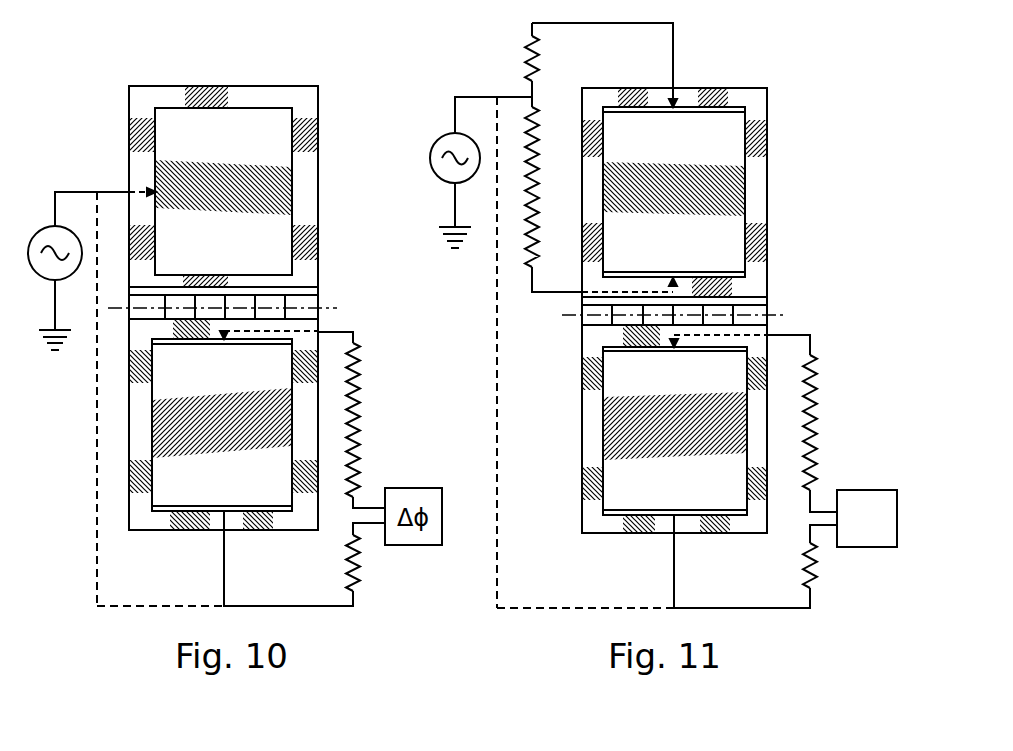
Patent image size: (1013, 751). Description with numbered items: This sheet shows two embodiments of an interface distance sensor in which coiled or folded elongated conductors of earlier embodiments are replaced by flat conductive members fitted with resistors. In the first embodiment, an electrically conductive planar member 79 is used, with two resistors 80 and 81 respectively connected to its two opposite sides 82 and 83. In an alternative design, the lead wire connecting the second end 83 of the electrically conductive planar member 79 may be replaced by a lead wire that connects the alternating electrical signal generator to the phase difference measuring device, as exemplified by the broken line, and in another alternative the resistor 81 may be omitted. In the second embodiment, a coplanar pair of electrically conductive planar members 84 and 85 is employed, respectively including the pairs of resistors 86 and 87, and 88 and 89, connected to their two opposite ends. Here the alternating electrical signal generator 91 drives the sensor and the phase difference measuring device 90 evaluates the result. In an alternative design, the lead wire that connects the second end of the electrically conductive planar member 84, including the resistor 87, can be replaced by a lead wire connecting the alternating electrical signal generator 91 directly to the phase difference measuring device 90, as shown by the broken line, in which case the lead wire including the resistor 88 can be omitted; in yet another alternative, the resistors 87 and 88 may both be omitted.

In FIG. 10, the electrically conductive planar member 79 is at (180, 418).
In FIG. 10, the resistor 80 is at (362, 418).
In FIG. 10, the resistor 81 is at (363, 568).
In FIG. 10, the first side of the electrically conductive planar member 82 is at (156, 333).
In FIG. 10, the second end of the electrically conductive planar member 83 is at (161, 512).
In FIG. 11, the electrically conductive planar member 84 is at (630, 427).
In FIG. 11, the electrically conductive planar member 85 is at (718, 193).
In FIG. 11, the resistor 86 is at (814, 408).
In FIG. 11, the resistor 87 is at (822, 558).
In FIG. 11, the resistor 88 is at (528, 54).
In FIG. 11, the resistor 89 is at (541, 130).
In FIG. 11, the phase difference measuring device 90 is at (862, 490).
In FIG. 11, the alternating electrical signal generator 91 is at (447, 141).